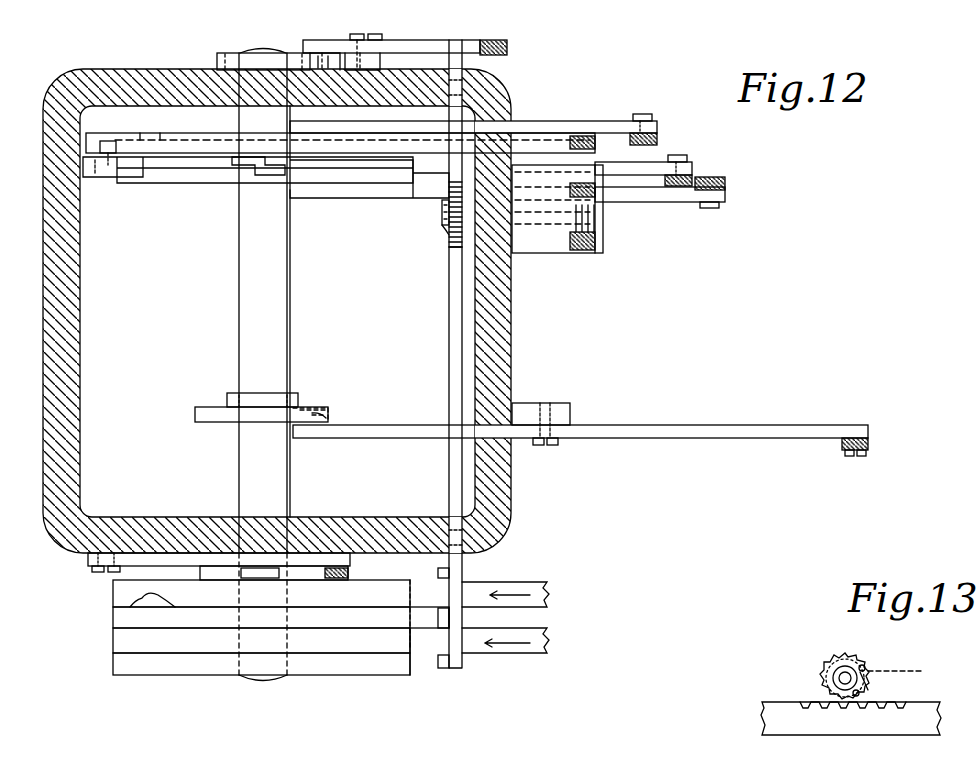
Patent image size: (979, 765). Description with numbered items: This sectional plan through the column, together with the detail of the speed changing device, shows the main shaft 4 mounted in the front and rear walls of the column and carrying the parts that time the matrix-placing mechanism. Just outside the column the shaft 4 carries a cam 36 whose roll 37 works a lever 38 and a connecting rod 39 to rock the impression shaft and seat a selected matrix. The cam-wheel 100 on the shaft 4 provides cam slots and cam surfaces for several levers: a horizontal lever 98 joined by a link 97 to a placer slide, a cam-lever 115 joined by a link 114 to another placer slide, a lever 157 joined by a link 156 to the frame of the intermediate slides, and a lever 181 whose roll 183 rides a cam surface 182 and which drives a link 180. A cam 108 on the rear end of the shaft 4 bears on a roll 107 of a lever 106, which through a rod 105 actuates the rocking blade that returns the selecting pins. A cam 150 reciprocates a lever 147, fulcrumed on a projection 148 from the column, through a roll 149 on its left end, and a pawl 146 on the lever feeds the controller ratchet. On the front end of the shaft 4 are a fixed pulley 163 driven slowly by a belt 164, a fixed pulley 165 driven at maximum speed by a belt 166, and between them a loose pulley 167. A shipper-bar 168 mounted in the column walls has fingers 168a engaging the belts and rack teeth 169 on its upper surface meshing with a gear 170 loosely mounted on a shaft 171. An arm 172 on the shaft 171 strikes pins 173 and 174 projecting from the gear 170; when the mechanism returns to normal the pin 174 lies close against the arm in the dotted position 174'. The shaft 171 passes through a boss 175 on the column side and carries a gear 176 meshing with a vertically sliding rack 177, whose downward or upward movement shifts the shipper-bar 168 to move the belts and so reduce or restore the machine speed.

In FIG. 12, the shaft 4 is at (262, 50).
In FIG. 12, the cam 36 is at (216, 572).
In FIG. 12, the roll 37 is at (254, 578).
In FIG. 12, the lever 38 is at (219, 559).
In FIG. 12, the connecting rod 39 is at (348, 571).
In FIG. 12, the link 97 is at (725, 186).
In FIG. 12, the horizontal lever 98 is at (664, 195).
In FIG. 12, the cam-wheel 100 is at (326, 175).
In FIG. 12, the rod 105 is at (504, 42).
In FIG. 12, the lever 106 is at (380, 43).
In FIG. 12, the roll 107 is at (328, 40).
In FIG. 12, the cam 108 is at (224, 53).
In FIG. 12, the link 114 is at (657, 136).
In FIG. 12, the cam-lever 115 is at (610, 124).
In FIG. 12, the pawl 146 is at (842, 448).
In FIG. 12, the lever 147 is at (660, 426).
In FIG. 12, the projection 148 is at (527, 414).
In FIG. 12, the roll 149 is at (330, 418).
In FIG. 12, the cam 150 is at (215, 412).
In FIG. 12, the link 156 is at (692, 176).
In FIG. 12, the lever 157 is at (643, 166).
In FIG. 12, the fixed pulley 163 is at (261, 651).
In FIG. 12, the belt 164 is at (540, 650).
In FIG. 12, the fixed pulley 165 is at (118, 607).
In FIG. 12, the belt 166 is at (532, 588).
In FIG. 12, the loose pulley 167 is at (281, 616).
In FIG. 12, the shipper-bar 168 is at (448, 462).
In FIG. 13, the shipper-bar 168 is at (851, 718).
In FIG. 12, the fingers 168a is at (442, 582).
In FIG. 12, the rack teeth 169 is at (449, 252).
In FIG. 13, the rack teeth 169 is at (810, 700).
In FIG. 12, the gear 170 is at (449, 240).
In FIG. 13, the gear 170 is at (825, 676).
In FIG. 13, the shaft 171 is at (866, 666).
In FIG. 12, the arm 172 is at (442, 224).
In FIG. 13, the arm 172 is at (848, 663).
In FIG. 12, the pin 173 is at (442, 212).
In FIG. 13, the pin 173 is at (840, 655).
In FIG. 13, the pin 174 is at (886, 684).
In FIG. 13, the pin position 174' is at (913, 666).
In FIG. 12, the boss 175 is at (557, 209).
In FIG. 12, the gear 176 is at (595, 240).
In FIG. 12, the vertically sliding rack 177 is at (595, 197).
In FIG. 12, the link 180 is at (595, 152).
In FIG. 12, the lever 181 is at (518, 136).
In FIG. 12, the cam surface 182 is at (170, 180).
In FIG. 12, the roll 183 is at (245, 170).